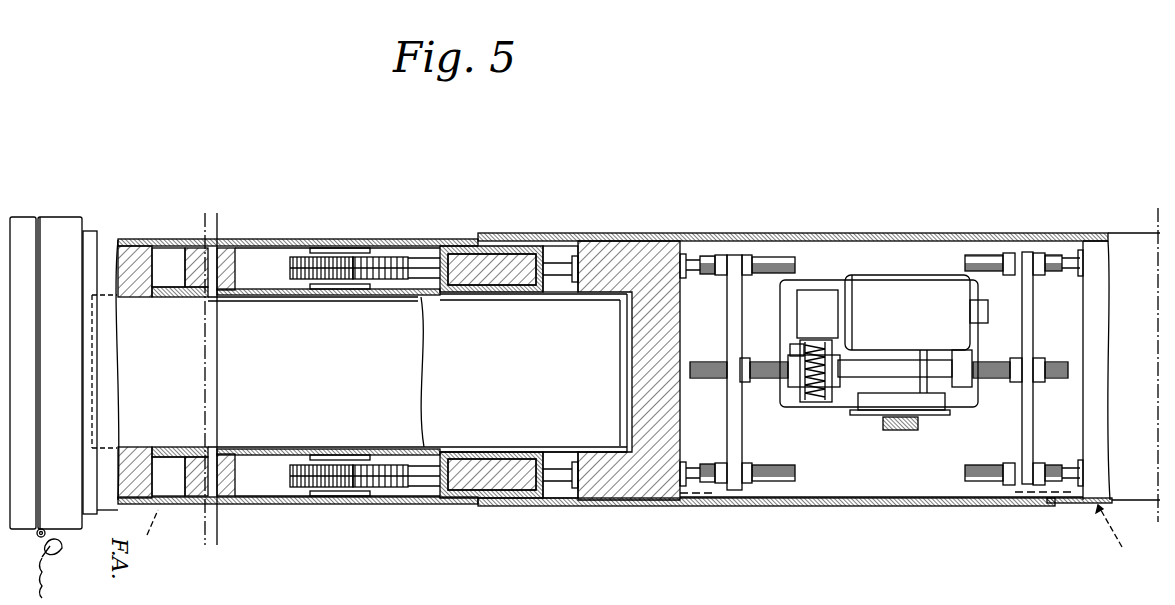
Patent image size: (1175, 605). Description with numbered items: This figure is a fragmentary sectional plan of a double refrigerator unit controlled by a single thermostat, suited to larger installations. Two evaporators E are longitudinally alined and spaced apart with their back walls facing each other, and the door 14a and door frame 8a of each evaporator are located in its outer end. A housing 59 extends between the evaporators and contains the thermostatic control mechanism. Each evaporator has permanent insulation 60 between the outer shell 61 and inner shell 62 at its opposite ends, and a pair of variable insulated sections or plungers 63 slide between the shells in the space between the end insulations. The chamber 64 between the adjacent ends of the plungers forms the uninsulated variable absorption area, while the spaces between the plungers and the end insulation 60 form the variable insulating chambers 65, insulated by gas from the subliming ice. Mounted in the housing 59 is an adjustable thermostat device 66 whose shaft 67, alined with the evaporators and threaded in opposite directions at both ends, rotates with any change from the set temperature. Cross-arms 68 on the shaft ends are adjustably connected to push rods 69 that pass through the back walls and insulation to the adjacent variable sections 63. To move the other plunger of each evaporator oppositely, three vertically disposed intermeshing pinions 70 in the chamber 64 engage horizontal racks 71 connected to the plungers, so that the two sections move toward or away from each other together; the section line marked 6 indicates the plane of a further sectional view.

The door 14a is at (22, 222).
The door frame 8a is at (58, 232).
The evaporator E is at (108, 255).
The housing 59 is at (700, 235).
The permanent insulation 60 is at (135, 285).
The outer shell 61 is at (255, 240).
The inner shell 62 is at (137, 455).
The variable insulated section 63 is at (232, 292).
The chamber 64 is at (272, 278).
The variable insulating chamber 65 is at (167, 265).
The adjustable thermostat device 66 is at (897, 333).
The shaft 67 is at (772, 380).
The cross-arm 68 is at (735, 420).
The push rod 69 is at (560, 265).
The pinion 70 is at (340, 265).
The rack 71 is at (415, 268).
The section line 6 is at (633, 537).